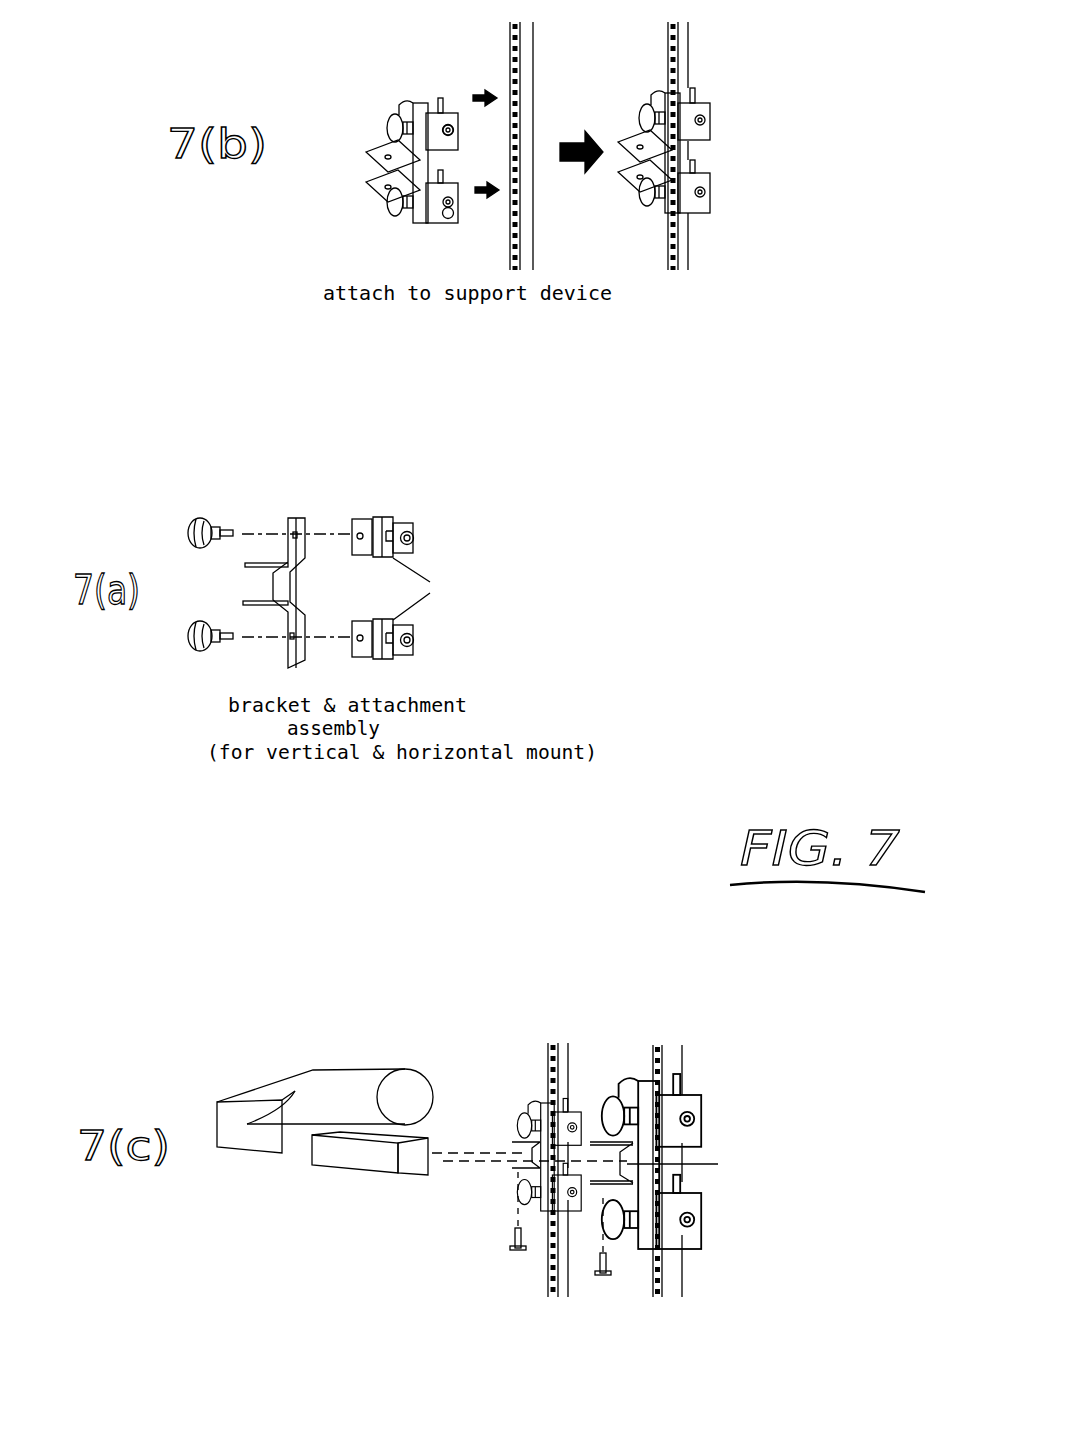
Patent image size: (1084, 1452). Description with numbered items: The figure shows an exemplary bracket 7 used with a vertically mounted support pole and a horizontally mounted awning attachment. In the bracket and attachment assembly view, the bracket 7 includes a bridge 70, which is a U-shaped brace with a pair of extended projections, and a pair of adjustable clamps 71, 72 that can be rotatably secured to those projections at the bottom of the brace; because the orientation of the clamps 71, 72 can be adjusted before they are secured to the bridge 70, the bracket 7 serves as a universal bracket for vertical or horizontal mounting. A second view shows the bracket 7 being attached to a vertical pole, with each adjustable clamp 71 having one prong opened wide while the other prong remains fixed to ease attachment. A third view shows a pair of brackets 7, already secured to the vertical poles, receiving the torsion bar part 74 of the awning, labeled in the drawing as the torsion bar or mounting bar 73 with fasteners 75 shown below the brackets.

The bracket 7 is at (350, 202).
The bridge 70 is at (295, 510).
The adjustable clamp 71 is at (450, 130).
The adjustable clamp 72 is at (413, 660).
The torsion bar / mounting bar 73 is at (408, 1162).
The torsion bar part of the awning 74 is at (413, 1078).
The bolt / fastener 75 is at (607, 1272).